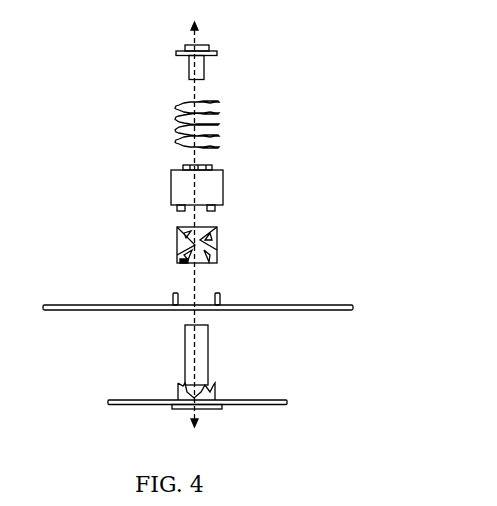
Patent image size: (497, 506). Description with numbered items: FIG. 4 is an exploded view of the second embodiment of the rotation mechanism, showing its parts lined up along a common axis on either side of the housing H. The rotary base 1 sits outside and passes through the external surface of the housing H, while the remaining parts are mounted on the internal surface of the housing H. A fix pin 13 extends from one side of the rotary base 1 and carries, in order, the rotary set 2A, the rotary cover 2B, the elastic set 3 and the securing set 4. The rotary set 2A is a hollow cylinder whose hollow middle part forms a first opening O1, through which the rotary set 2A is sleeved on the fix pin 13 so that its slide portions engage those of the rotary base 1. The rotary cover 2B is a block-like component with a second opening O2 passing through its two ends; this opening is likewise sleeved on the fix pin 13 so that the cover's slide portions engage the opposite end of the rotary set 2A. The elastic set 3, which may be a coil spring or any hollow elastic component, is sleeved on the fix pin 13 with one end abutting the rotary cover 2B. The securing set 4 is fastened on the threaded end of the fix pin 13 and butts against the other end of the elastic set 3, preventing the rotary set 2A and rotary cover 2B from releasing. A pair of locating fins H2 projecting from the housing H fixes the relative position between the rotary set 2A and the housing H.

The securing set 4 is at (217, 61).
The elastic set 3 is at (220, 126).
The rotary cover 2B is at (223, 190).
The rotary set 2A is at (220, 246).
The second opening O2 is at (190, 221).
The first opening O1 is at (190, 266).
The housing H is at (362, 306).
The locating fins H2 is at (222, 303).
The fix pin 13 is at (213, 362).
The rotary base 1 is at (287, 402).